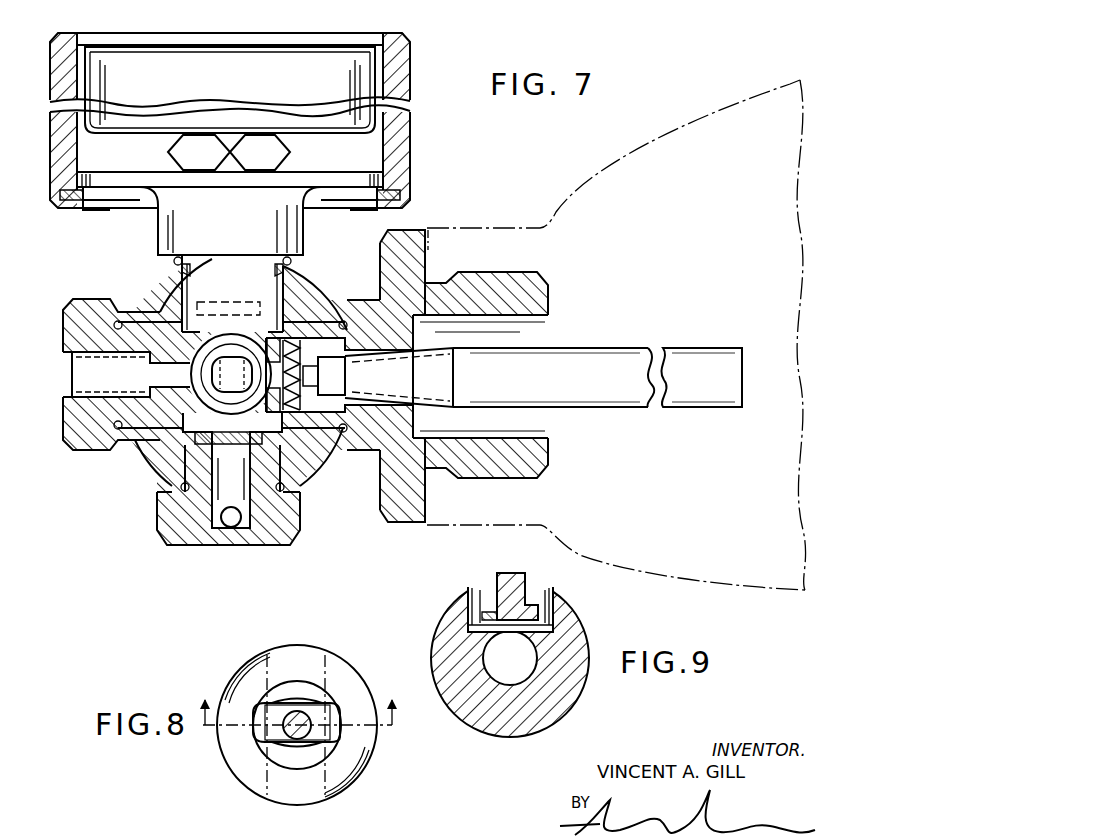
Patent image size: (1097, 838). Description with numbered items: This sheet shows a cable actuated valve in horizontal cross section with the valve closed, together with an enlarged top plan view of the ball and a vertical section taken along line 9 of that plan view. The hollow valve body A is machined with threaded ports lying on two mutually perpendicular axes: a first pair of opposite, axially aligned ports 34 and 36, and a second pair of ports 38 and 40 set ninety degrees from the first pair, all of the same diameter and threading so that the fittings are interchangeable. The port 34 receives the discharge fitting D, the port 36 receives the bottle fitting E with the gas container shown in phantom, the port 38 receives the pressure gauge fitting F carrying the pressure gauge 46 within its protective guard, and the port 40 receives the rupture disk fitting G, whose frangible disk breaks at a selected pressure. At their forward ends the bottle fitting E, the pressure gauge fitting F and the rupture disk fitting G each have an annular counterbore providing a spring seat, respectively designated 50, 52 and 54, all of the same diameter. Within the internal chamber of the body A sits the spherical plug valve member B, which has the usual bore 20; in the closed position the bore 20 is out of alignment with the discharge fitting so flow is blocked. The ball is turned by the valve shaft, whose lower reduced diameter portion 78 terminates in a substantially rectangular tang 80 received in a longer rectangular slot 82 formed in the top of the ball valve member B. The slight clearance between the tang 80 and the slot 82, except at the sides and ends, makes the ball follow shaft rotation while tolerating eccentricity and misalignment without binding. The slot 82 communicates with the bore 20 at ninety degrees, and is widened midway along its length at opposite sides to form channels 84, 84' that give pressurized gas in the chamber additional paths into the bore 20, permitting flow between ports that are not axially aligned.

In FIG. 7, the pressure gauge 46 is at (228, 77).
In FIG. 7, the pressure gauge fitting F is at (163, 229).
In FIG. 7, the discharge fitting D is at (80, 300).
In FIG. 7, the port 34 is at (147, 322).
In FIG. 7, the seat 52 is at (207, 302).
In FIG. 7, the port 38 is at (303, 310).
In FIG. 7, the port 36 is at (325, 325).
In FIG. 7, the plug valve member B is at (236, 347).
In FIG. 8, the plug valve member B is at (282, 641).
In FIG. 9, the plug valve member B is at (480, 745).
In FIG. 7, the seat 50 is at (504, 375).
In FIG. 7, the bottle fitting E is at (500, 278).
In FIG. 7, the valve body A is at (147, 467).
In FIG. 7, the seat 54 is at (228, 479).
In FIG. 7, the port 40 is at (247, 455).
In FIG. 7, the rupture disk fitting G is at (185, 535).
In FIG. 8, the reduced diameter portion of valve shaft 78 is at (302, 720).
In FIG. 9, the reduced diameter portion of valve shaft 78 is at (525, 577).
In FIG. 8, the channel 84 is at (297, 682).
In FIG. 9, the channel 84 is at (537, 595).
In FIG. 8, the channel 84' is at (297, 768).
In FIG. 8, the slot 82 is at (343, 742).
In FIG. 9, the slot 82 is at (554, 607).
In FIG. 8, the tang 80 is at (270, 727).
In FIG. 9, the tang 80 is at (482, 620).
In FIG. 8, the bore 20 is at (267, 772).
In FIG. 9, the bore 20 is at (532, 680).
In FIG. 8, the section line 9 is at (297, 725).